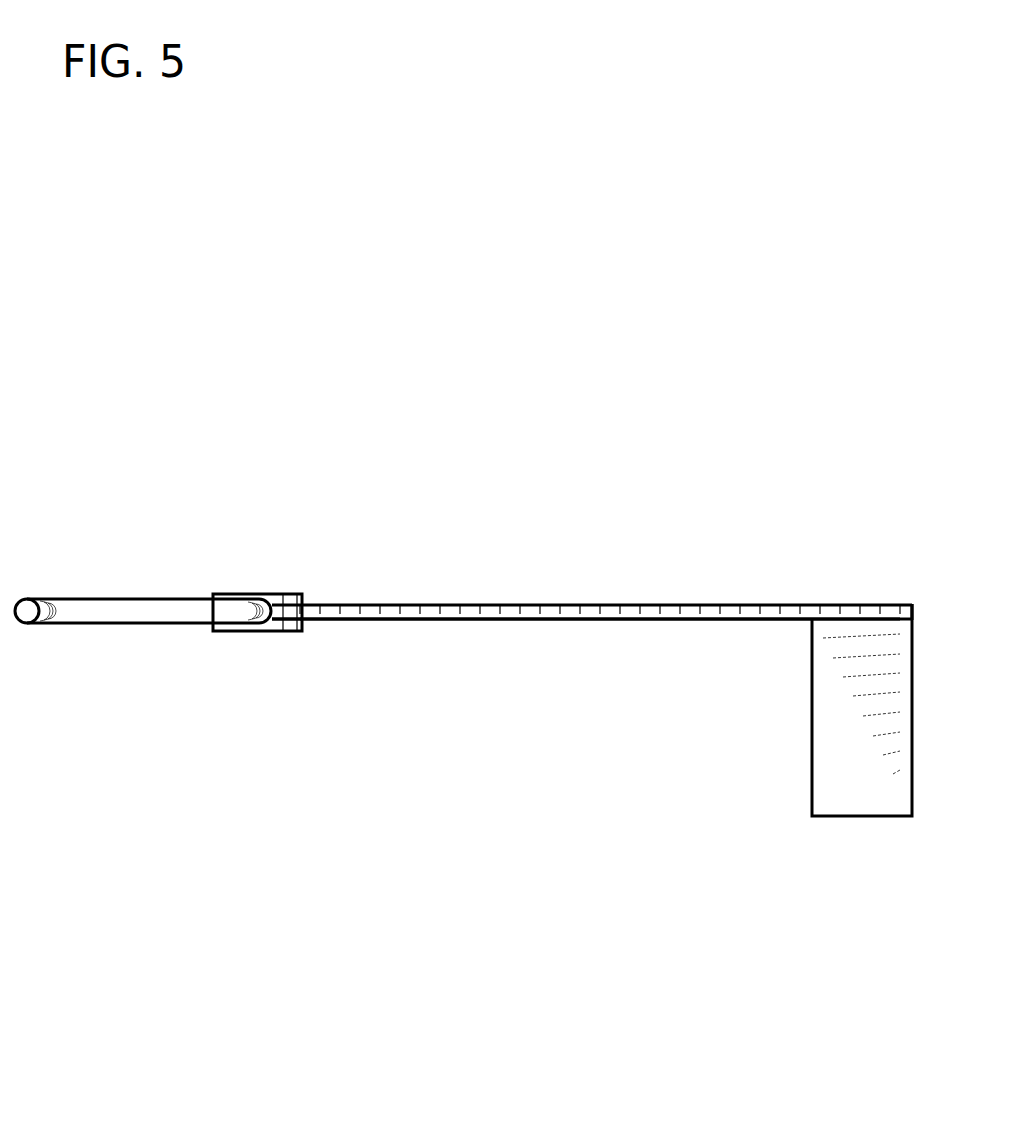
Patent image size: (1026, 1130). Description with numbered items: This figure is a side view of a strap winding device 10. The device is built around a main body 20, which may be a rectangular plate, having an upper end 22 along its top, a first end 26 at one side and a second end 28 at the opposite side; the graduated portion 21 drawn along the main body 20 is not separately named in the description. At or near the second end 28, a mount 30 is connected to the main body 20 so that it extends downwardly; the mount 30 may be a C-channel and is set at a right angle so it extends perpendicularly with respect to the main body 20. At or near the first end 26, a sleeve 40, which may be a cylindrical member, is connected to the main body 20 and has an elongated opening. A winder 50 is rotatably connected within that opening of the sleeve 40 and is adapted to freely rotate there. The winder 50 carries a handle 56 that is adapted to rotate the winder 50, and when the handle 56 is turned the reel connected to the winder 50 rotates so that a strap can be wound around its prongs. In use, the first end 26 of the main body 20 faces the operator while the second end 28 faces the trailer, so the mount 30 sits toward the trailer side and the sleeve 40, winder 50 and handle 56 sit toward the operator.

The strap winding device 10 is at (473, 224).
The main body 20 is at (598, 605).
The graduated scale 21 is at (476, 604).
The upper end 22 is at (457, 620).
The first end 26 is at (273, 630).
The second end 28 is at (912, 605).
The mount 30 is at (853, 778).
The sleeve 40 is at (257, 585).
The winder 50 is at (143, 642).
The handle 56 is at (26, 614).